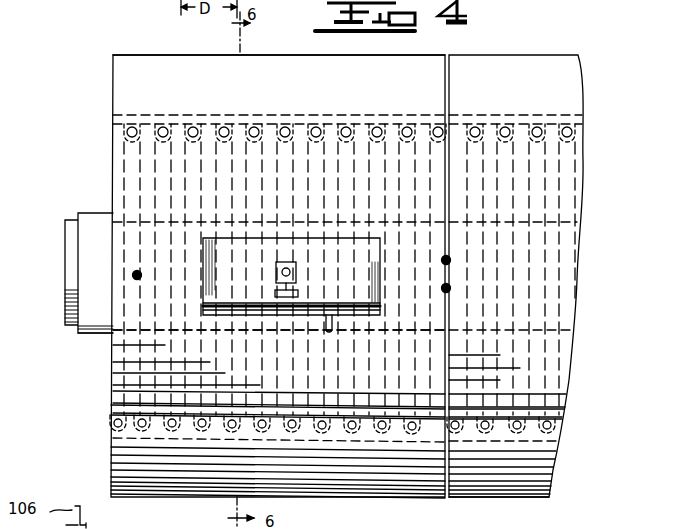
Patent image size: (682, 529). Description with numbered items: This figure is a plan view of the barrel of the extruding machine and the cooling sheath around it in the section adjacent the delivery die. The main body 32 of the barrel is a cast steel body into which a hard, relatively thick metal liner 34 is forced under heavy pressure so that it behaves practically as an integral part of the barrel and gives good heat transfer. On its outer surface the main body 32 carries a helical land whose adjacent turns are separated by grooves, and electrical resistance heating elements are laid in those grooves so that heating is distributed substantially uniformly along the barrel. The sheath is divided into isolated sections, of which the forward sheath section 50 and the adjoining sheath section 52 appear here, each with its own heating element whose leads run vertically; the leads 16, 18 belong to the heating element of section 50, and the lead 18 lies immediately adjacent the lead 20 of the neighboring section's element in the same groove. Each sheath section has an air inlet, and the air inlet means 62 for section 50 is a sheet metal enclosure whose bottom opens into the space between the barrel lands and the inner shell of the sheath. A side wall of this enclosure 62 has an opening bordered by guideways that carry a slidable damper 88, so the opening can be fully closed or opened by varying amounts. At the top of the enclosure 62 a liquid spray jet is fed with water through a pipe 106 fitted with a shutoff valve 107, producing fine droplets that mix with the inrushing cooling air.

The sheath section 50 is at (246, 53).
The sheath section 52 is at (558, 51).
The main body of the barrel 32 is at (118, 169).
The metal liner 34 is at (66, 306).
The lead 16 is at (134, 279).
The lead 18 is at (452, 262).
The lead 20 is at (452, 289).
The air inlet means 62 is at (207, 314).
The damper 88 is at (259, 323).
The pipe 106 is at (298, 264).
The shutoff valve 107 is at (287, 267).